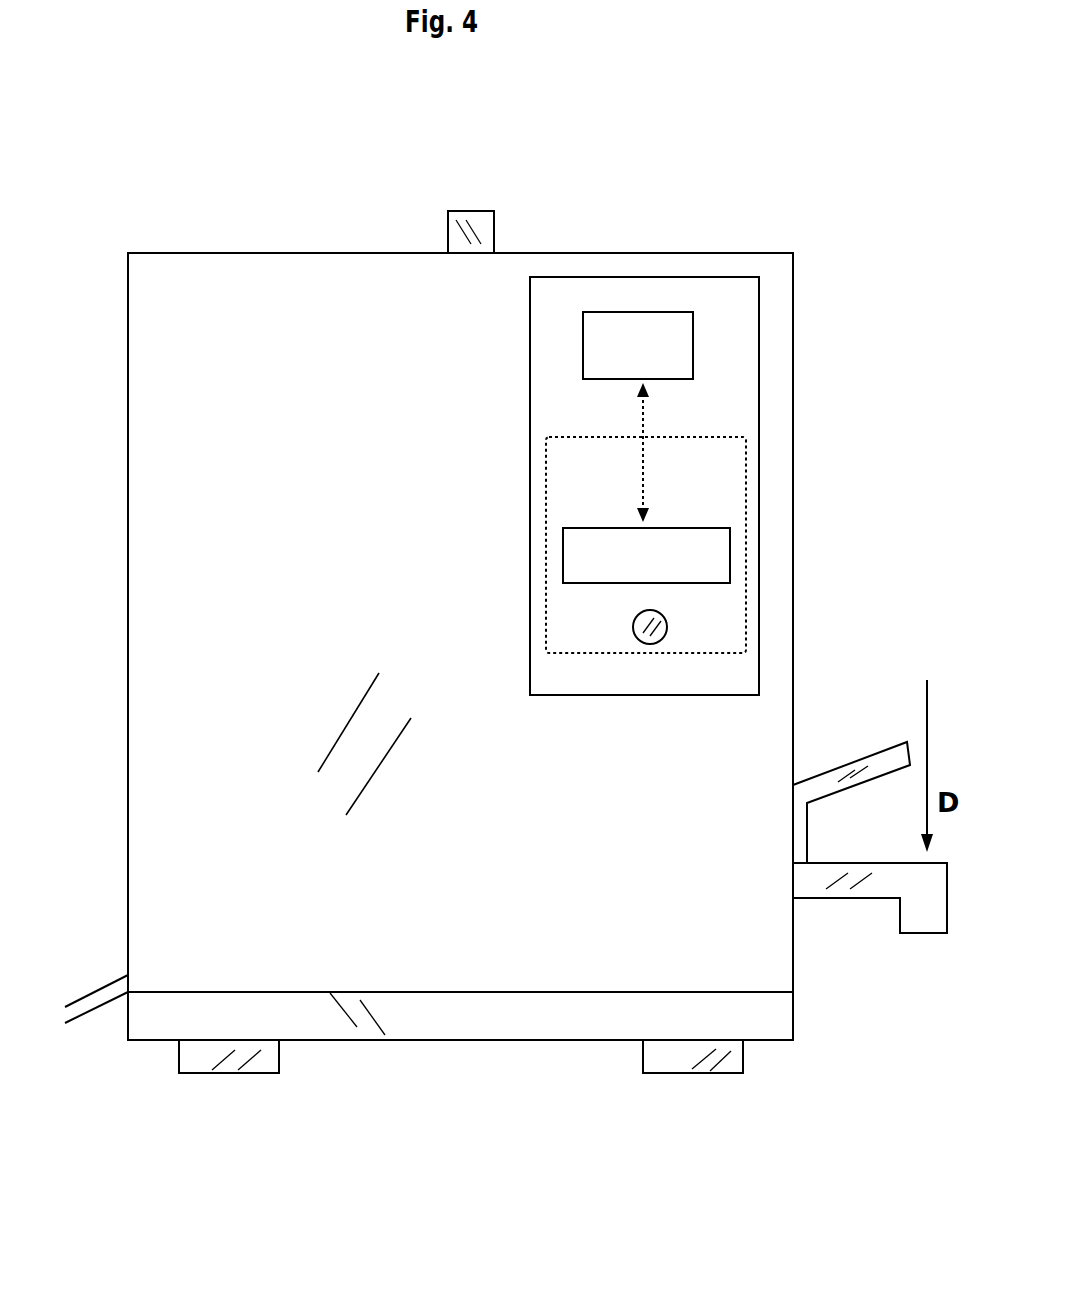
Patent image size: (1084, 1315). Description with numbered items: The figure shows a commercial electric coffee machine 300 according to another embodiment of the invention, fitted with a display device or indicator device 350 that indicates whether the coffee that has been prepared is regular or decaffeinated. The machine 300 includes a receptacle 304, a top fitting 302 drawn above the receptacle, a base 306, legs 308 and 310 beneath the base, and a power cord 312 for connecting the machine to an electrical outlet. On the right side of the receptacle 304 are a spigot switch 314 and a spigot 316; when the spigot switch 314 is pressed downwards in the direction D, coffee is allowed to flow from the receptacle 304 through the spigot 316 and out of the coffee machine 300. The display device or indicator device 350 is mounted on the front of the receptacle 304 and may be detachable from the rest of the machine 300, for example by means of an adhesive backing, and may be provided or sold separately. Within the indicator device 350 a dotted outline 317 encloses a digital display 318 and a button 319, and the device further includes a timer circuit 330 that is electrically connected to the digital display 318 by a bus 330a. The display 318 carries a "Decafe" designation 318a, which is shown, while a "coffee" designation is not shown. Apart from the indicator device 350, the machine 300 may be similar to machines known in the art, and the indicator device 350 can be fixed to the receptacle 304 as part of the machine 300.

The commercial electric coffee machine 300 is at (646, 196).
The top inlet/connector 302 is at (481, 215).
The receptacle 304 is at (763, 768).
The base 306 is at (504, 1008).
The leg 308 is at (192, 1053).
The leg 310 is at (666, 1058).
The power cord 312 is at (90, 998).
The spigot switch 314 is at (893, 757).
The spigot 316 is at (888, 883).
The selection area 317 is at (684, 438).
The digital display 318 is at (630, 527).
The "Decafe" designation 318a is at (697, 538).
The button 319 is at (634, 643).
The timer circuit 330 is at (673, 345).
The bus 330a is at (647, 420).
The display device or indicator device 350 is at (541, 427).